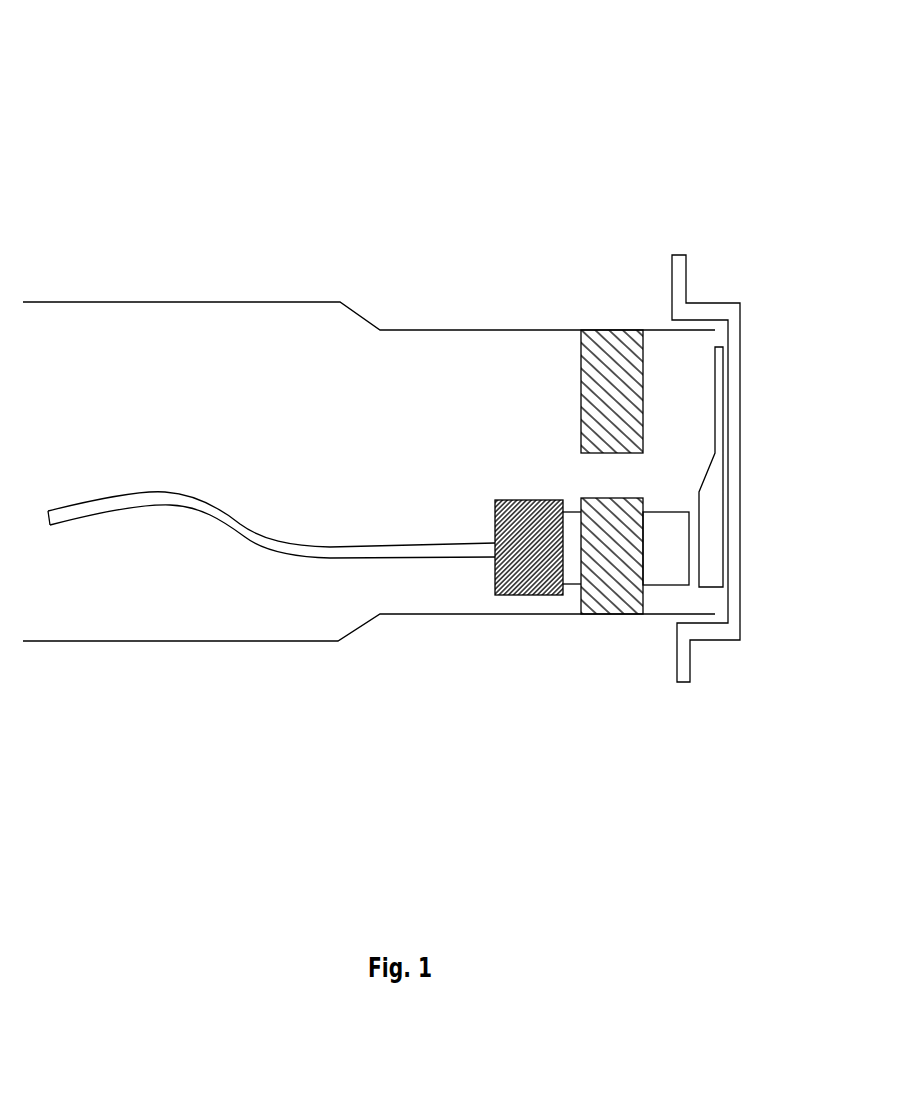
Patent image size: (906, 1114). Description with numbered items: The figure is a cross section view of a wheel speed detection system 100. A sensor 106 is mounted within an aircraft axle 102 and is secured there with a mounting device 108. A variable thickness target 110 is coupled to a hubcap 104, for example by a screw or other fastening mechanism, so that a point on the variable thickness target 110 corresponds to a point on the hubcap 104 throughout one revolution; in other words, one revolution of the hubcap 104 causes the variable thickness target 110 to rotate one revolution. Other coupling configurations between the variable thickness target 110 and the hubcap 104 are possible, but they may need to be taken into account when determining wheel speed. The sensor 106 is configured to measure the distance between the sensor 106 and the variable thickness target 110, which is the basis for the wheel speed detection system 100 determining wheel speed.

The wheel speed detection system 100 is at (106, 138).
The aircraft axle 102 is at (233, 302).
The hubcap 104 is at (688, 273).
The sensor 106 is at (653, 587).
The mounting device 108 is at (608, 338).
The variable thickness target 110 is at (725, 487).